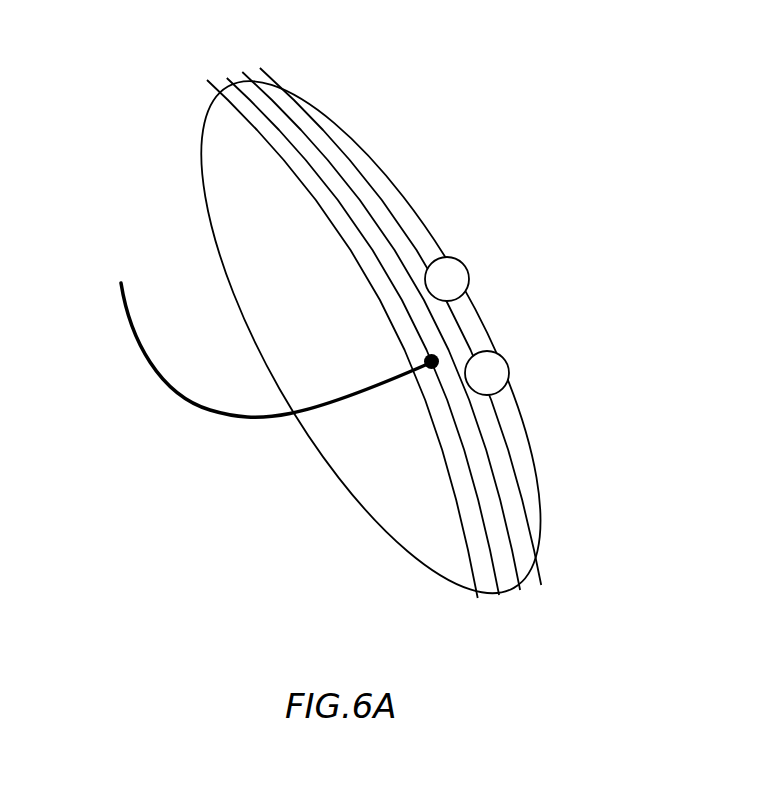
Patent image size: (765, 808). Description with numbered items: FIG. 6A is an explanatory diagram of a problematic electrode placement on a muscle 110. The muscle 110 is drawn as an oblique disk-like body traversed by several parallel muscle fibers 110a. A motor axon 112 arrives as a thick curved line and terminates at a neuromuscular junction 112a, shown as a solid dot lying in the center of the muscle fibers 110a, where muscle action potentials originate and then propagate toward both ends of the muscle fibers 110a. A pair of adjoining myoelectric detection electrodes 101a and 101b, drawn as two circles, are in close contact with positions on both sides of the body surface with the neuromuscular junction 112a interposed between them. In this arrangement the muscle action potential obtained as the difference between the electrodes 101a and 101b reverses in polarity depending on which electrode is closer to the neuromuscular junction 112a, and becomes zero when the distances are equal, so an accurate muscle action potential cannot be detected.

The muscle 110 is at (202, 170).
The muscle fibers 110a is at (338, 172).
The myoelectric detection electrode 101a is at (465, 272).
The myoelectric detection electrode 101b is at (507, 371).
The motor axons 112 is at (173, 388).
The neuromuscular junction 112a is at (428, 368).